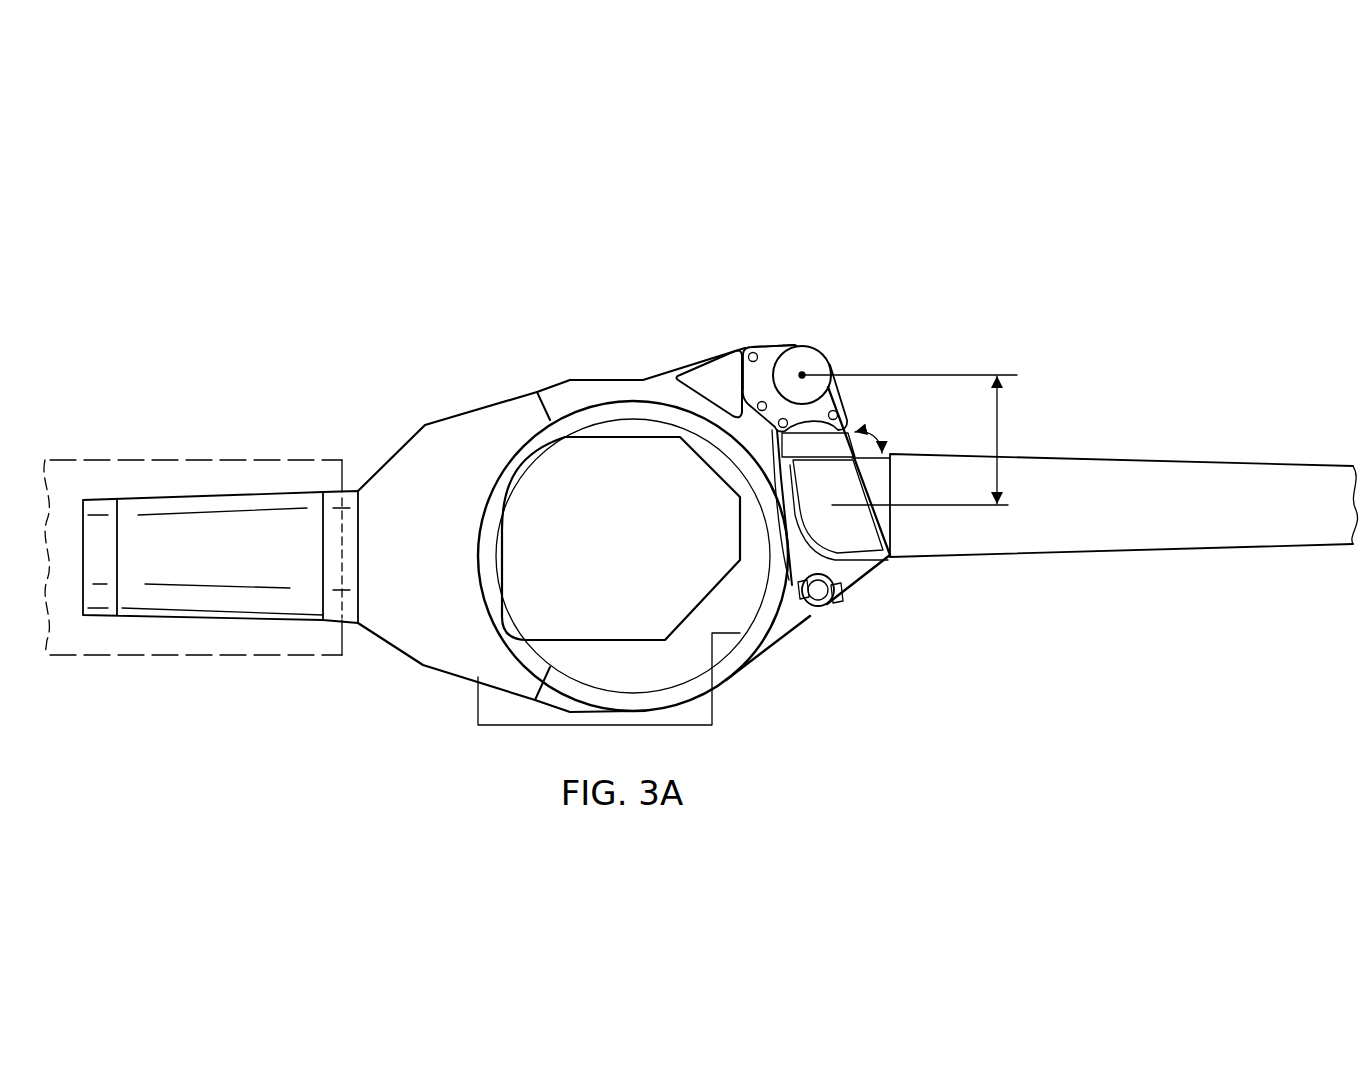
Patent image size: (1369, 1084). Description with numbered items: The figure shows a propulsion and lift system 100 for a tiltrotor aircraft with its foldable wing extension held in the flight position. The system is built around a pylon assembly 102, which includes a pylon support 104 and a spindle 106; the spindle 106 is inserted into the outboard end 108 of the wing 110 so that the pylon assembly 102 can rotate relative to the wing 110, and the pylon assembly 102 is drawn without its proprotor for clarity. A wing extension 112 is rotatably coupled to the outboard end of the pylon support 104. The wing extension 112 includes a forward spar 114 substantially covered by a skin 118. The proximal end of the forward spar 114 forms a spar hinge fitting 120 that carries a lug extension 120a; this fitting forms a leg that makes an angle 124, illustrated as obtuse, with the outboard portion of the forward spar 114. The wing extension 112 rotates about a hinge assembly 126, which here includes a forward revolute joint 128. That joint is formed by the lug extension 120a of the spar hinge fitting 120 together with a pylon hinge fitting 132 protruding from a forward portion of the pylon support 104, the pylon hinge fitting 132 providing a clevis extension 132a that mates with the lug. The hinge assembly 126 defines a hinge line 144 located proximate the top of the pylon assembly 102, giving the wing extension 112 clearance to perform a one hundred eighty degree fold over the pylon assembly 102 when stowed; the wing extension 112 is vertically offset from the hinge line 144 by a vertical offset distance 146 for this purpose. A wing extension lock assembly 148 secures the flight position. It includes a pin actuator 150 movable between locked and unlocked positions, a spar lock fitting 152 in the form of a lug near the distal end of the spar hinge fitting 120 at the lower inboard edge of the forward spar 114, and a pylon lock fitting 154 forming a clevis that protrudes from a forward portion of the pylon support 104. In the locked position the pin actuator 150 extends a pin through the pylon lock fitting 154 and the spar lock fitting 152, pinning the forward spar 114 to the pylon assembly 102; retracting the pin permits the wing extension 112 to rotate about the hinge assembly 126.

The propulsion and lift system 100 is at (437, 252).
The pylon assembly 102 is at (515, 391).
The pylon support 104 is at (593, 379).
The spindle 106 is at (258, 533).
The outboard end 108 is at (350, 477).
The wing 110 is at (150, 457).
The wing extension 112 is at (1153, 461).
The forward spar 114 is at (863, 518).
The skin 118 is at (1233, 472).
The spar hinge fitting 120 is at (851, 422).
The lug extension 120a is at (853, 375).
The angle 124 is at (880, 427).
The hinge assembly 126 is at (799, 342).
The forward revolute joint 128 is at (826, 349).
The pylon hinge fitting 132 is at (737, 350).
The clevis extension 132a is at (768, 345).
The hinge line 144 is at (744, 350).
The vertical offset distance 146 is at (1000, 436).
The wing extension lock assembly 148 is at (824, 616).
The pin actuator 150 is at (800, 588).
The spar lock fitting 152 is at (862, 572).
The pylon lock fitting 154 is at (787, 630).